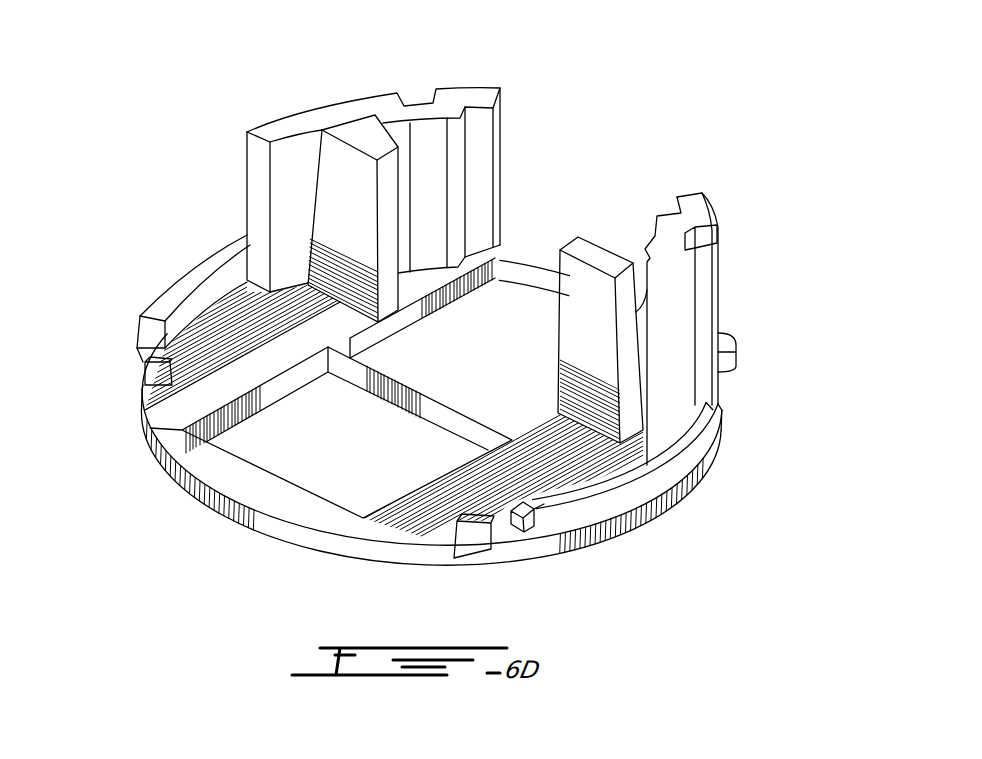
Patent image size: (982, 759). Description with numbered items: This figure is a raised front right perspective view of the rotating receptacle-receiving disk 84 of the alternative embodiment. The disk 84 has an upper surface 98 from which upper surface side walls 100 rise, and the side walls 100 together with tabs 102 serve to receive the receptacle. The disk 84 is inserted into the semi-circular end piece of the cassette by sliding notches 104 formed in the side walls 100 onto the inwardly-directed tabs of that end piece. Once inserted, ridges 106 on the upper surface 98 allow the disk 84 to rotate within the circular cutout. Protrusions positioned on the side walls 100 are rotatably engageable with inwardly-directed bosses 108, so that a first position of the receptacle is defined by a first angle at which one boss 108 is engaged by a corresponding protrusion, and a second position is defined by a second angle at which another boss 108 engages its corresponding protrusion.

The rotating receptacle-receiving disk 84 is at (165, 125).
The upper surface 98 is at (163, 413).
The upper surface side walls 100 is at (310, 118).
The tabs 102 is at (352, 190).
The notches 104 is at (150, 373).
The ridges 106 is at (170, 293).
The inwardly-directed bosses 108 is at (737, 352).